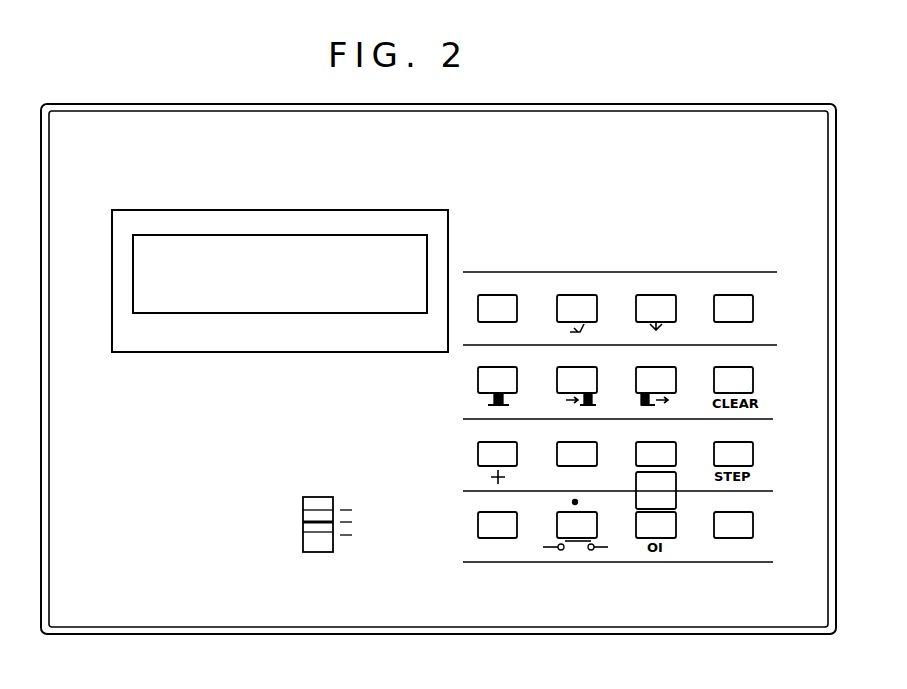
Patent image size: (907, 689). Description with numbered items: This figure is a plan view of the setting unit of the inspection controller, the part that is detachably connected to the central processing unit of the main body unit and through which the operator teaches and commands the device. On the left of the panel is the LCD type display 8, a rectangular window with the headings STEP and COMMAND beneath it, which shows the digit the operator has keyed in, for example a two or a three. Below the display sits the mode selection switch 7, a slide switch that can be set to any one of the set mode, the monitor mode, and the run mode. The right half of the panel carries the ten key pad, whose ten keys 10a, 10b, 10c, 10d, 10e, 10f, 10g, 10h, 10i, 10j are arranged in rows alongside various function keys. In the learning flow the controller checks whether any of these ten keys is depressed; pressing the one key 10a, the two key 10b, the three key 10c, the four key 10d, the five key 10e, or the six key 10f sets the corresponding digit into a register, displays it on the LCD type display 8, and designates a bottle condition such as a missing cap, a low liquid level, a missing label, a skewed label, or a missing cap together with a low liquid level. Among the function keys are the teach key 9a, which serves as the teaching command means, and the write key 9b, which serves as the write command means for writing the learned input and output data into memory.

The mode selection switch 7 is at (310, 543).
The LCD type display 8 is at (327, 245).
The teach key 9a is at (745, 310).
The write key 9b is at (745, 522).
The "1" key 10a is at (479, 455).
The "2" key 10b is at (560, 465).
The "3" key 10c is at (637, 458).
The "4" key 10d is at (487, 378).
The "5" key 10e is at (590, 378).
The "6" key 10f is at (668, 378).
The ten key 10g is at (486, 305).
The ten key 10h is at (563, 300).
The ten key 10i is at (667, 300).
The ten key 10j is at (481, 530).